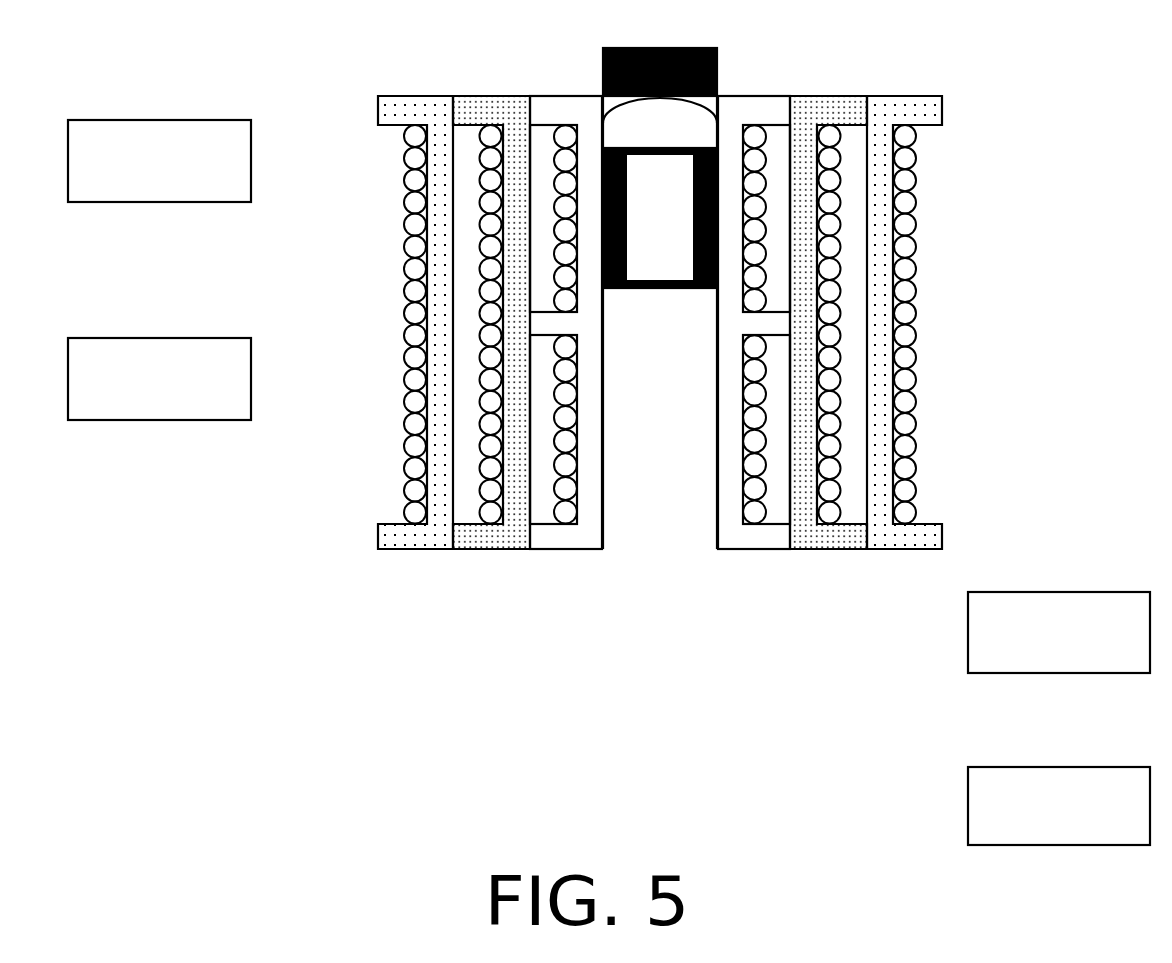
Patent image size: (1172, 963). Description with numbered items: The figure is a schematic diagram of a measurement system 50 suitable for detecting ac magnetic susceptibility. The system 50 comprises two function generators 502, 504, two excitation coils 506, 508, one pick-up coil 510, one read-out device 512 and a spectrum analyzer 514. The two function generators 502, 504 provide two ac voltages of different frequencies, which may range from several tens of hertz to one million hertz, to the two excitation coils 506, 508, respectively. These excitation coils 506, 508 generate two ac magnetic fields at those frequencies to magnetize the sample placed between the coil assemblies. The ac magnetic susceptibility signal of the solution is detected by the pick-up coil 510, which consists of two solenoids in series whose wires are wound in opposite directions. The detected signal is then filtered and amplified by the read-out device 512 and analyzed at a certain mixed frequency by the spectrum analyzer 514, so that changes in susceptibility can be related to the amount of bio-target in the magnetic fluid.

The system 50 is at (188, 724).
The function generator 502 is at (251, 160).
The function generator 504 is at (251, 378).
The excitation coil 506 is at (495, 537).
The excitation coil 508 is at (412, 537).
The pick-up coil 510 is at (580, 537).
The read-out device 512 is at (755, 549).
The spectrum analyzer 514 is at (1060, 673).